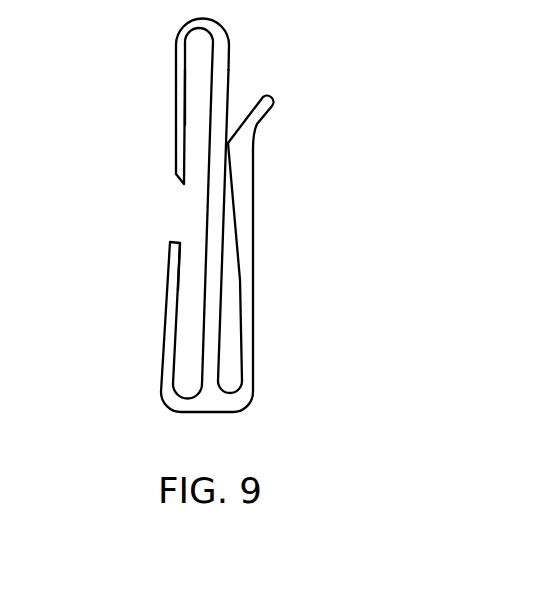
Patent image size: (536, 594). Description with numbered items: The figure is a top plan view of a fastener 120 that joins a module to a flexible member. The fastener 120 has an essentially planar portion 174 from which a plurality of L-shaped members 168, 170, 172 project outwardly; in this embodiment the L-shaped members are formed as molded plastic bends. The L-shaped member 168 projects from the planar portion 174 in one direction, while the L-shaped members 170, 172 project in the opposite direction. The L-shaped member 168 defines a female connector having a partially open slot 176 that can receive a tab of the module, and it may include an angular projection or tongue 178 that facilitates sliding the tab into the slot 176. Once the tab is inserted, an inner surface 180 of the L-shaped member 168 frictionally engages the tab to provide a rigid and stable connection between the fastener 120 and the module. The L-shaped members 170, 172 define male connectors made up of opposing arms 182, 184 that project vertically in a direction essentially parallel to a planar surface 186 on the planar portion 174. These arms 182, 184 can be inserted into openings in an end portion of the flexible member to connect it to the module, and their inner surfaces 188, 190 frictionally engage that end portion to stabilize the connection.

The fastener 120 is at (210, 218).
The L-shaped member 168 is at (247, 287).
The L-shaped member 170 is at (180, 30).
The L-shaped member 172 is at (163, 398).
The essentially planar portion 174 is at (230, 32).
The partially open slot 176 is at (230, 355).
The angular projection or tongue 178 is at (273, 103).
The inner surface 180 is at (232, 197).
The arm 182 is at (176, 108).
The arm 184 is at (162, 302).
The planar surface 186 is at (200, 358).
The inner surface 188 is at (181, 74).
The inner surface 190 is at (180, 257).